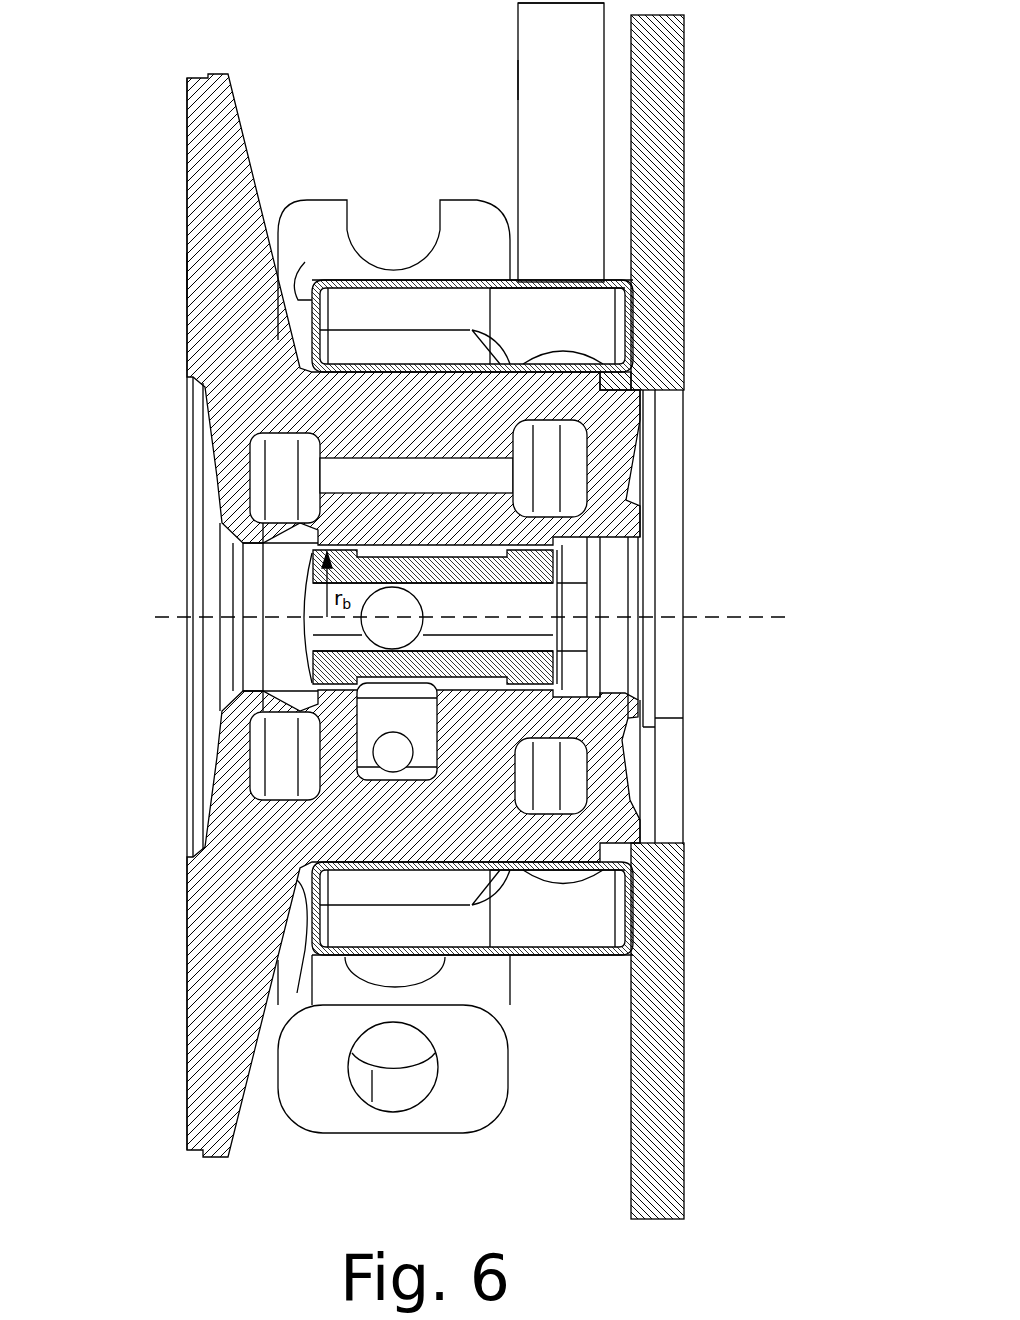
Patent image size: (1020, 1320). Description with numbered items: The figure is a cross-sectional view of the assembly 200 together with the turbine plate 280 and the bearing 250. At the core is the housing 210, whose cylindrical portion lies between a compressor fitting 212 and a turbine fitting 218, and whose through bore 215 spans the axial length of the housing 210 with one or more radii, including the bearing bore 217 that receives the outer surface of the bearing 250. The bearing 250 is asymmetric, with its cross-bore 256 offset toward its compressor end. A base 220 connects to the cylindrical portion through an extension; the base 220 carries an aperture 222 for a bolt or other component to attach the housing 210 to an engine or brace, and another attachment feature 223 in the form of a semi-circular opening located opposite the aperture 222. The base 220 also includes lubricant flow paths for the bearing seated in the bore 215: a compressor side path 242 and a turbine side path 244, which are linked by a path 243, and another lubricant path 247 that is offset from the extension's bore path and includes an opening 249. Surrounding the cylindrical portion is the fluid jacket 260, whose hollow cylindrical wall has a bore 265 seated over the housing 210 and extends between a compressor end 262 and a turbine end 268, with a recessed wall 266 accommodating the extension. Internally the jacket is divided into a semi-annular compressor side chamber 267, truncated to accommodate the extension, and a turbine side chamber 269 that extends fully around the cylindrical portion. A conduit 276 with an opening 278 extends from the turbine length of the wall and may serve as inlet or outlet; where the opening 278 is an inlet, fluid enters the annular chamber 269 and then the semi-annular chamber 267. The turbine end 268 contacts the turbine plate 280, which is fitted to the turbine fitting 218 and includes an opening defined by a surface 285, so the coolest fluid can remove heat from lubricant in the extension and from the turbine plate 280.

The assembly 200 is at (343, 123).
The housing 210 is at (200, 77).
The compressor fitting 212 is at (188, 255).
The through bore 215 is at (618, 693).
The bearing bore 217 is at (478, 552).
The turbine fitting 218 is at (643, 411).
The base 220 is at (508, 1093).
The aperture 222 is at (408, 1108).
The attachment feature 223 is at (348, 222).
The compressor side path 242 is at (285, 616).
The path 243 is at (416, 475).
The turbine side path 244 is at (550, 617).
The lubricant path 247 is at (397, 731).
The opening 249 is at (413, 752).
The bearing 250 is at (472, 656).
The cross-bore 256 is at (424, 617).
The fluid jacket 260 is at (517, 160).
The compressor end 262 is at (300, 286).
The bore 265 is at (608, 366).
The recessed wall 266 is at (513, 357).
The compressor side chamber 267 is at (472, 617).
The turbine end 268 is at (623, 282).
The turbine side chamber 269 is at (557, 615).
The conduit 276 is at (517, 78).
The opening 278 is at (517, 5).
The turbine plate 280 is at (685, 343).
The surface 285 is at (656, 408).